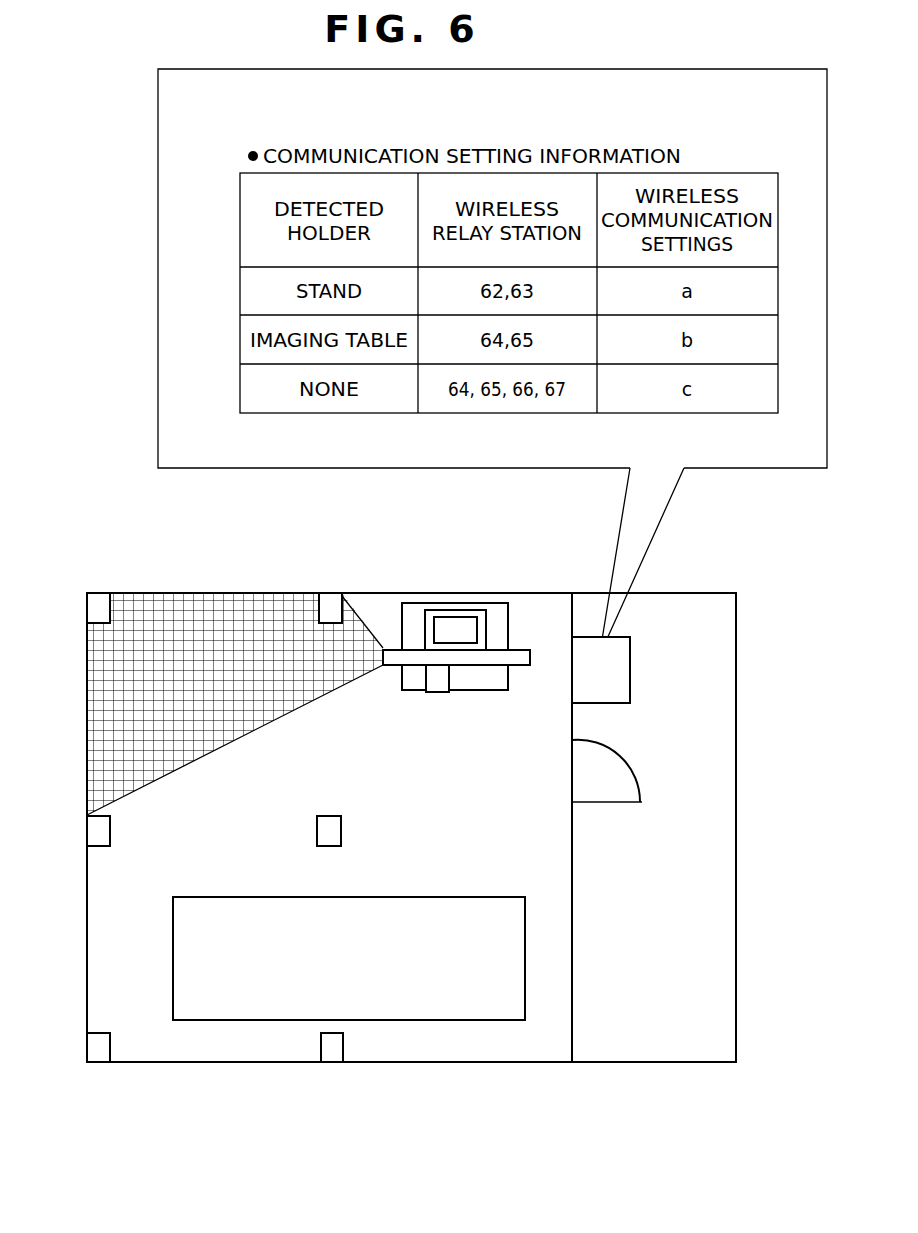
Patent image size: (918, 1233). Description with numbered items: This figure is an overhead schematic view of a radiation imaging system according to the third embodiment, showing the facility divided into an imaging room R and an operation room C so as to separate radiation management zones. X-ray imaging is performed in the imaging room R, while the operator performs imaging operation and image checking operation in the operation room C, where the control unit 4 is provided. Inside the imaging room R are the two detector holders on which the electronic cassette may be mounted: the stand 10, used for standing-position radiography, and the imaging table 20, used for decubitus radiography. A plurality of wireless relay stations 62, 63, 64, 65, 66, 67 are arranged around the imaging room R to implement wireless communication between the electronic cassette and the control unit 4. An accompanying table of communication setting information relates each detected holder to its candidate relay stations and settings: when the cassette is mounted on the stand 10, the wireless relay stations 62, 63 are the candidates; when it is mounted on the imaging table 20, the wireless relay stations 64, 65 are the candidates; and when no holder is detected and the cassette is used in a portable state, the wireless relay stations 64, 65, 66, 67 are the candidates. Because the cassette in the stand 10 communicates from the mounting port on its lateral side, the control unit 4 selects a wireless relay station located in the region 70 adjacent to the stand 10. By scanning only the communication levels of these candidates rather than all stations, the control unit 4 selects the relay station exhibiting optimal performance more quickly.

The control unit 4 is at (613, 672).
The stand 10 is at (468, 660).
The imaging table 20 is at (466, 982).
The wireless relay station 62 is at (331, 608).
The wireless relay station 63 is at (99, 608).
The wireless relay station 64 is at (325, 830).
The wireless relay station 65 is at (98, 832).
The wireless relay station 66 is at (332, 1048).
The wireless relay station 67 is at (98, 1048).
The region 70 is at (219, 625).
The imaging room R is at (535, 622).
The operation room C is at (674, 630).